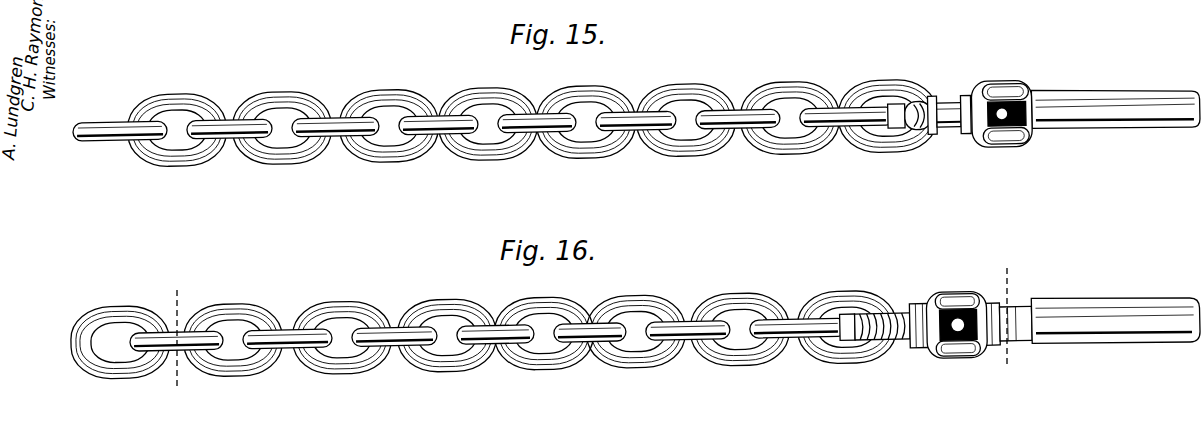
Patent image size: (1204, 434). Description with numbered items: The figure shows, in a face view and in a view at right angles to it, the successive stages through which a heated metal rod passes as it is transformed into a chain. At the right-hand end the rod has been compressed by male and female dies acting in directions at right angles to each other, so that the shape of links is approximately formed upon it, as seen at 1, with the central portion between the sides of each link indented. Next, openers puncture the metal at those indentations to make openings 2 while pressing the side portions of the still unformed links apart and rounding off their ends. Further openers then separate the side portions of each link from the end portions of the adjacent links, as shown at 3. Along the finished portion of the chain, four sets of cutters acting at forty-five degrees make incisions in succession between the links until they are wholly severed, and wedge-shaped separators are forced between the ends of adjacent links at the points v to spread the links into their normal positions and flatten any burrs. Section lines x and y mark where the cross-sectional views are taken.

In FIG. 15, the impressed portion of the rod 1 is at (1063, 94).
In FIG. 16, the impressed portion of the rod 1 is at (1054, 293).
In FIG. 15, the openings 2 is at (845, 125).
In FIG. 16, the openings 2 is at (900, 333).
In FIG. 15, the separated link portions 3 is at (737, 128).
In FIG. 16, the separated link portions 3 is at (793, 335).
In FIG. 15, the separator points v is at (388, 133).
In FIG. 16, the separator points v is at (393, 347).
In FIG. 16, the section line x- x is at (170, 339).
In FIG. 16, the section line y- y is at (1005, 317).